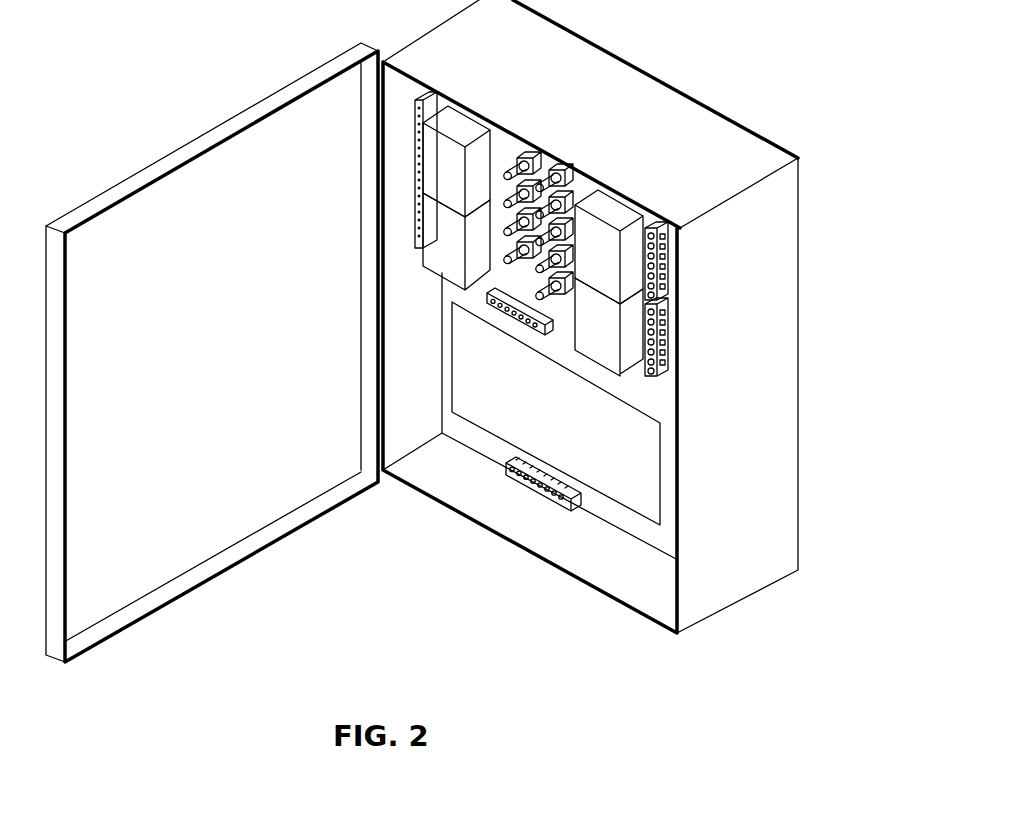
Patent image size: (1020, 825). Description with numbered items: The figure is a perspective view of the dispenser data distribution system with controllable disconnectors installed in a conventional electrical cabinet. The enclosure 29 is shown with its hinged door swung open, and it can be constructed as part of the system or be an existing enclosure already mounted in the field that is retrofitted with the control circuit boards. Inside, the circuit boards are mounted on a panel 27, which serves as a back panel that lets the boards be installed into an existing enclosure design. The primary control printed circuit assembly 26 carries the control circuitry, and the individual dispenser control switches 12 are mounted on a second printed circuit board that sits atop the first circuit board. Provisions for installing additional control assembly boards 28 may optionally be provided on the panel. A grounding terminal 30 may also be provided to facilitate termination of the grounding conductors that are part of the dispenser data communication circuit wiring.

The dispenser control switches 12 is at (535, 198).
The primary control printed circuit assembly 26 is at (678, 370).
The panel 27 is at (633, 525).
The additional control assembly boards 28 is at (512, 405).
The enclosure 29 is at (248, 187).
The grounding terminal 30 is at (540, 503).